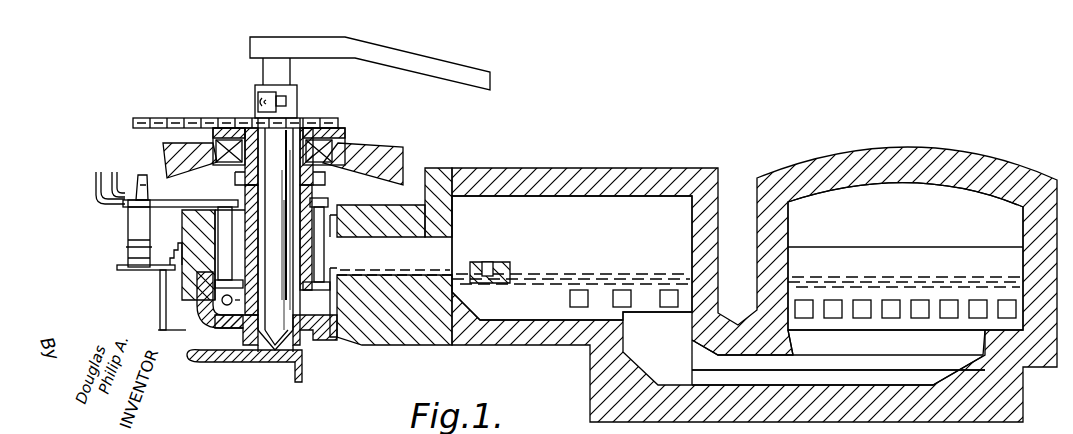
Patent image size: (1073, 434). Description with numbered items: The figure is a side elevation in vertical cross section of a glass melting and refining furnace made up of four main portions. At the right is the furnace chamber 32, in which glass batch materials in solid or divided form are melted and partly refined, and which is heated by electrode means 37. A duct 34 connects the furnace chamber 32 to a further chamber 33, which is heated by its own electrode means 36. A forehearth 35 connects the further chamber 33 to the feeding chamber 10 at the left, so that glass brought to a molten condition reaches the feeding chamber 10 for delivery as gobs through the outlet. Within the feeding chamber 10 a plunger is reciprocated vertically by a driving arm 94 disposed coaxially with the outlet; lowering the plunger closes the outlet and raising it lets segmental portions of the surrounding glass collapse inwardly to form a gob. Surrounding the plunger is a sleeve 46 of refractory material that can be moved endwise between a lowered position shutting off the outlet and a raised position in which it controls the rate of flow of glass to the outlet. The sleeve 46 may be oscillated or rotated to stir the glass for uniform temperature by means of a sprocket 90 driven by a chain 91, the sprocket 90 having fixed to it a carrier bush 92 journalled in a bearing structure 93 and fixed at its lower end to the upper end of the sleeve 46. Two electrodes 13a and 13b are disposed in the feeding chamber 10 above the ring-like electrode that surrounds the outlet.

The feeding chamber 10 is at (220, 300).
The electrode 13a is at (197, 284).
The electrode 13b is at (318, 298).
The furnace chamber 32 is at (905, 269).
The further chamber 33 is at (572, 258).
The duct 34 is at (838, 362).
The forehearth 35 is at (391, 256).
The electrode means 36 is at (570, 297).
The electrode means 37 is at (861, 300).
The sleeve 46 is at (266, 362).
The sprocket 90 is at (239, 118).
The chain 91 is at (159, 118).
The carrier bush 92 is at (318, 173).
The bearing structure 93 is at (342, 136).
The driving arm 94 is at (332, 37).